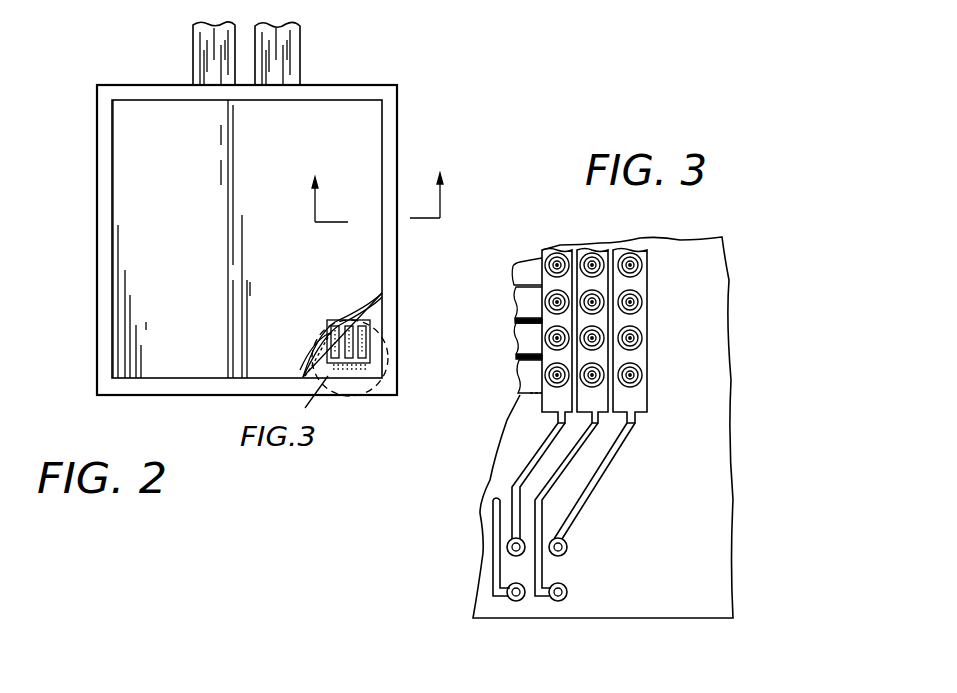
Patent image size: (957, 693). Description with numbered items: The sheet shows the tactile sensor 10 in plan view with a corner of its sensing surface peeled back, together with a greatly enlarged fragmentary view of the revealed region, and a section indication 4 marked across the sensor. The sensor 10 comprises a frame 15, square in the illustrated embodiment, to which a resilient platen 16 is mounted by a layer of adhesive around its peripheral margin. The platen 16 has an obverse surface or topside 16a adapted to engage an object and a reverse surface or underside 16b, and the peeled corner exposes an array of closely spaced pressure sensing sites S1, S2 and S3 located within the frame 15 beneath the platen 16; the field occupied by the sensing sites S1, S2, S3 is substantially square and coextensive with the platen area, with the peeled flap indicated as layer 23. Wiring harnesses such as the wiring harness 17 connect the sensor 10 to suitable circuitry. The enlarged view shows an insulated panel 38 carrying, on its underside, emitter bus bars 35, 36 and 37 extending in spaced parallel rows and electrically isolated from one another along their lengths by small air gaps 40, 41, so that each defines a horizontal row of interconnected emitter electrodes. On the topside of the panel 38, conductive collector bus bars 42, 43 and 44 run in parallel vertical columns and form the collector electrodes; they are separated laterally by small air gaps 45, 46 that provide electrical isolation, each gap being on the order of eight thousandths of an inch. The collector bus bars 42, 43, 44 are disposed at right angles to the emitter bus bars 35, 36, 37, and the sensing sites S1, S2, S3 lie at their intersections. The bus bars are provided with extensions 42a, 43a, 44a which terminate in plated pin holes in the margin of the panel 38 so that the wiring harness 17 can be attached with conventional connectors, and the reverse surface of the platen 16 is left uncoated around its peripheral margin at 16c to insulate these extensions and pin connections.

In FIG. 2, the section line 4- 4 is at (377, 181).
In FIG. 2, the tactile sensor 10 is at (422, 108).
In FIG. 2, the frame 15 is at (97, 140).
In FIG. 2, the resilient platen 16 is at (121, 341).
In FIG. 2, the topside 16a is at (126, 253).
In FIG. 2, the underside 16b is at (380, 305).
In FIG. 2, the uncoated peripheral margin 16c is at (331, 336).
In FIG. 2, the wiring harness 17 is at (292, 53).
In FIG. 2, the adhesive layer 23 is at (346, 330).
In FIG. 2, the pressure sensing site S1 is at (371, 345).
In FIG. 3, the pressure sensing site S1 is at (632, 303).
In FIG. 2, the pressure sensing site S2 is at (366, 356).
In FIG. 3, the pressure sensing site S2 is at (594, 339).
In FIG. 2, the pressure sensing site S3 is at (350, 372).
In FIG. 3, the pressure sensing site S3 is at (564, 374).
In FIG. 3, the bus bar 35 is at (532, 298).
In FIG. 3, the bus bar 36 is at (521, 338).
In FIG. 3, the bus bar 37 is at (518, 381).
In FIG. 3, the insulated panel 38 is at (493, 484).
In FIG. 3, the air gap 40 is at (514, 319).
In FIG. 3, the air gap 41 is at (531, 352).
In FIG. 3, the conductive bus bar 42 is at (643, 403).
In FIG. 3, the extension 42a is at (643, 527).
In FIG. 3, the conductive bus bar 43 is at (595, 418).
In FIG. 3, the extension 43a is at (626, 577).
In FIG. 3, the conductive bus bar 44 is at (548, 404).
In FIG. 3, the extension 44a is at (518, 515).
In FIG. 3, the air gap 45 is at (600, 405).
In FIG. 3, the air gap 46 is at (548, 406).